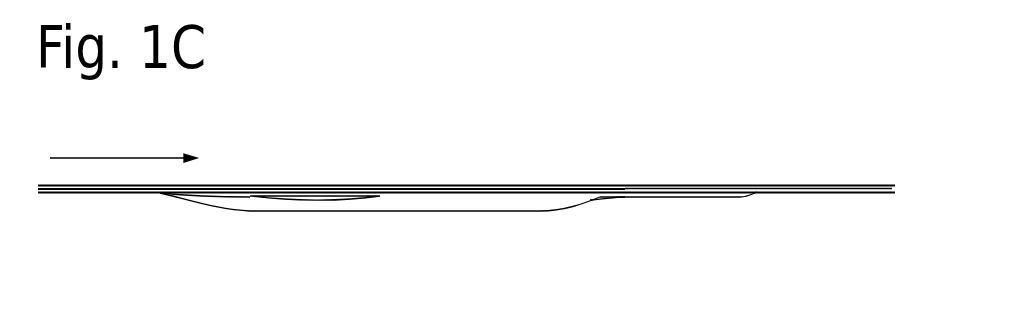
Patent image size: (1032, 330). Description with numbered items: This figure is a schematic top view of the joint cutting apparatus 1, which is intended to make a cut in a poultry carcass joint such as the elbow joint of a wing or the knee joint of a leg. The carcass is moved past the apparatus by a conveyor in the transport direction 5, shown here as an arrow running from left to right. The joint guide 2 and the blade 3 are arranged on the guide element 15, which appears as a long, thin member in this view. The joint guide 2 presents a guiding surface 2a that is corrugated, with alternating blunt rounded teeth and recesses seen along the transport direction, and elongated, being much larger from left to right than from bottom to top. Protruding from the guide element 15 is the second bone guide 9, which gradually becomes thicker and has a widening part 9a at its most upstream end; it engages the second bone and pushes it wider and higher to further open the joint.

The joint cutting apparatus 1 is at (466, 189).
The joint guide 2 is at (284, 188).
The guiding surface 2a is at (384, 188).
The blade 3 is at (758, 189).
The transport direction 5 is at (117, 162).
The second bone guide 9 is at (376, 212).
The widening part 9a is at (197, 199).
The guide element 15 is at (621, 198).